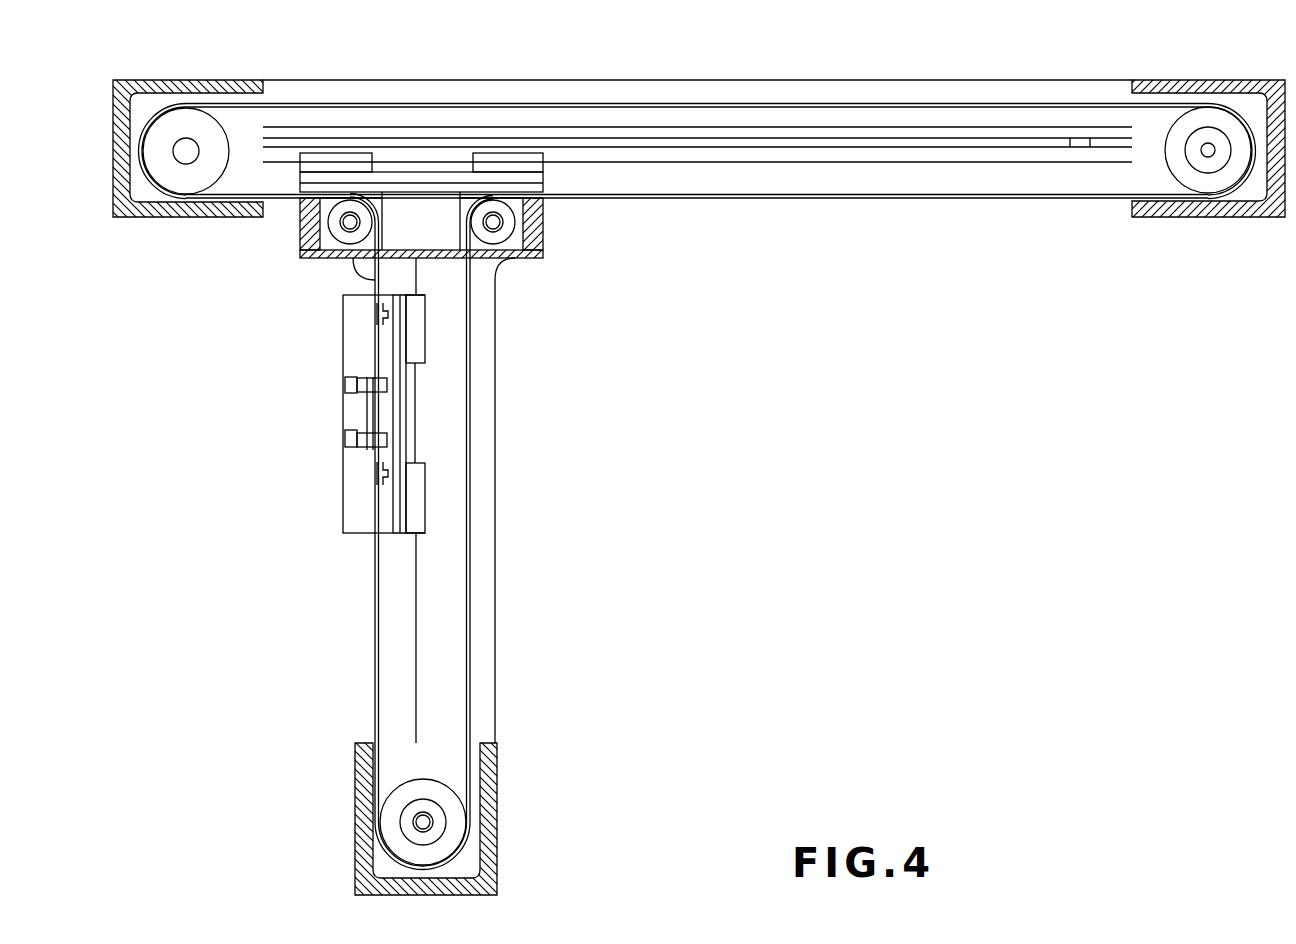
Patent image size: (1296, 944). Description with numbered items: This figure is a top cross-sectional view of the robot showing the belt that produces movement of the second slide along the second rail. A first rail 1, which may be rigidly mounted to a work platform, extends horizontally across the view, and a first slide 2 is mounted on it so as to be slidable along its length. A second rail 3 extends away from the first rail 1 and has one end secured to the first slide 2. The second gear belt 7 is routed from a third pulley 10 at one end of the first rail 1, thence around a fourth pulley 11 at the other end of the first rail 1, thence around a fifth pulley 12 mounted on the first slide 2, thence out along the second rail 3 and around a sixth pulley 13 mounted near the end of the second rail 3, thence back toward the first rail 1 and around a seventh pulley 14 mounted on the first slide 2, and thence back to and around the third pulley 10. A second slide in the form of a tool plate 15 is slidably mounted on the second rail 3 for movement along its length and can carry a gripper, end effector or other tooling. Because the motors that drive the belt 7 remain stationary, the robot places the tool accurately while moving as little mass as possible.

The first rail 1 is at (765, 80).
The first slide 2 is at (542, 223).
The second rail 3 is at (497, 572).
The second gear belt 7 is at (828, 198).
The third pulley 10 is at (174, 171).
The fourth pulley 11 is at (1215, 115).
The fifth pulley 12 is at (505, 226).
The sixth pulley 13 is at (452, 822).
The seventh pulley 14 is at (338, 230).
The tool plate 15 is at (360, 505).